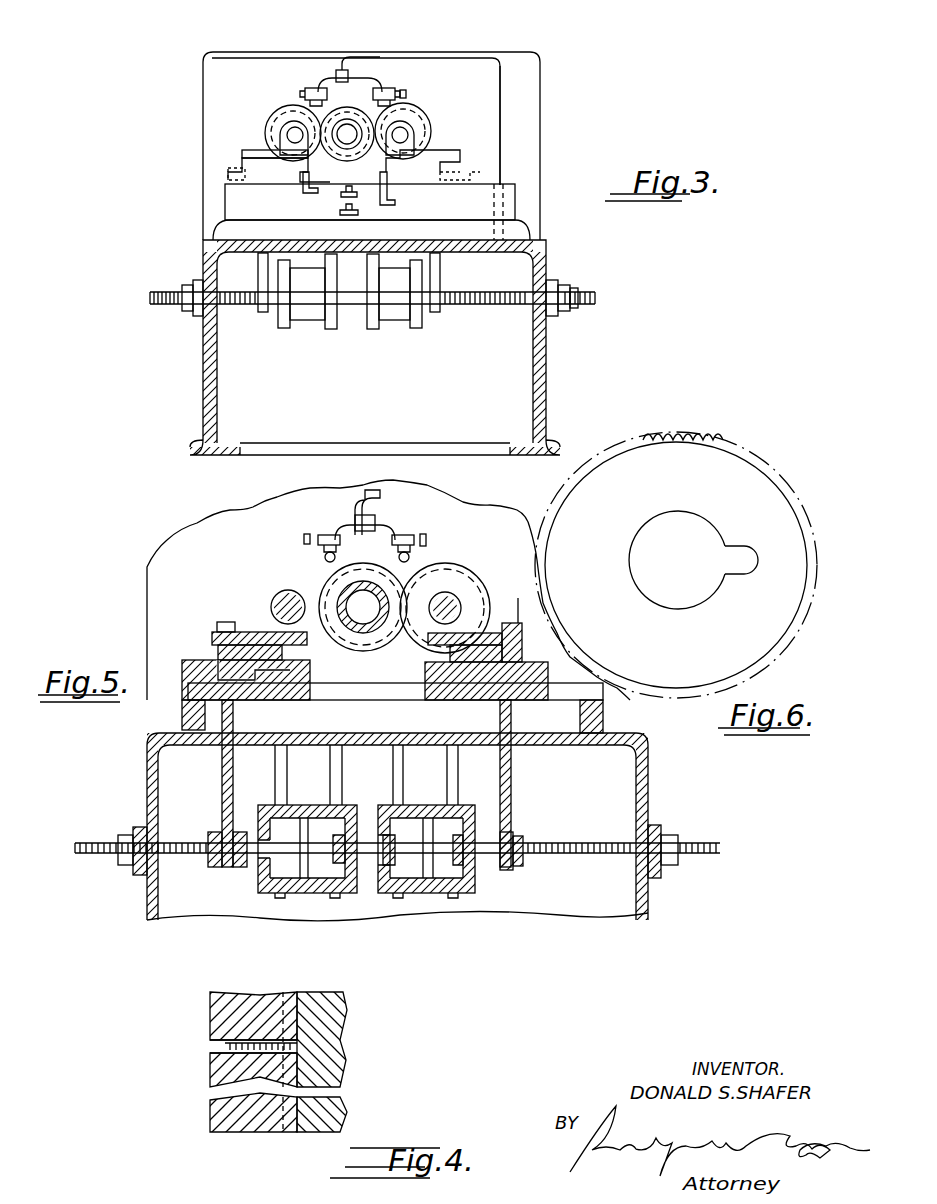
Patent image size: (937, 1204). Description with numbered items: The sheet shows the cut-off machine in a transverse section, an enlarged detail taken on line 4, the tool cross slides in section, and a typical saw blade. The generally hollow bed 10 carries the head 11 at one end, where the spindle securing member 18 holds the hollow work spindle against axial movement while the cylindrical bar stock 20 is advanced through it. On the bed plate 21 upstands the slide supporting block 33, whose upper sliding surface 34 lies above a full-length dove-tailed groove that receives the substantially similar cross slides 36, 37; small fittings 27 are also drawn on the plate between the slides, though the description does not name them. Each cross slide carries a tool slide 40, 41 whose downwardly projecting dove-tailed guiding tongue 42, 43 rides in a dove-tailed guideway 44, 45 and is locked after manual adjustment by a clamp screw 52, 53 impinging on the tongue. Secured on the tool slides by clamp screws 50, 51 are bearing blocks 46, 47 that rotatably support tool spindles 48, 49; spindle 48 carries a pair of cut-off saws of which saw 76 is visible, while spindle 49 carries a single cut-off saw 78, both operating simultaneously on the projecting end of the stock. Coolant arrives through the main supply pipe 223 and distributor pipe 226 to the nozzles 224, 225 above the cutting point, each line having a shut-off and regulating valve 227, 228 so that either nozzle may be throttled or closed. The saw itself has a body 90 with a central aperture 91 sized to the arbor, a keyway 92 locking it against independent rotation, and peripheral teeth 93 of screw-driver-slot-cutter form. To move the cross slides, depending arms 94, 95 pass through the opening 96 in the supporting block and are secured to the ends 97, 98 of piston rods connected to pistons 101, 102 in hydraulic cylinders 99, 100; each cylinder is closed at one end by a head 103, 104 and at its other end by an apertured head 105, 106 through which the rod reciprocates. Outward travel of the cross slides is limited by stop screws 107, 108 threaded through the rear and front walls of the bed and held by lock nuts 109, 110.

In FIG. 3, the section line 4 is at (216, 178).
In FIG. 3, the bed 10 is at (203, 288).
In FIG. 5, the bed 10 is at (665, 838).
In FIG. 3, the head 11 is at (540, 97).
In FIG. 5, the head 11 is at (147, 607).
In FIG. 3, the spindle securing member 18 is at (358, 110).
In FIG. 5, the spindle securing member 18 is at (326, 592).
In FIG. 3, the bar stock 20 is at (375, 118).
In FIG. 3, the bed plate 21 is at (530, 236).
In FIG. 3, the hook bracket 27 is at (352, 160).
In FIG. 3, the slide supporting block 33 is at (515, 202).
In FIG. 5, the slide supporting block 33 is at (606, 724).
In FIG. 4, the slide supporting block 33 is at (232, 1132).
In FIG. 3, the sliding surface 34 is at (503, 192).
In FIG. 5, the cross slide 36 is at (440, 700).
In FIG. 5, the cross slide 37 is at (308, 700).
In FIG. 3, the tool slide 40 is at (430, 165).
In FIG. 5, the tool slide 40 is at (522, 660).
In FIG. 3, the tool slide 41 is at (242, 160).
In FIG. 5, the tool slide 41 is at (216, 650).
In FIG. 5, the guiding tongue 42 is at (468, 700).
In FIG. 5, the guiding tongue 43 is at (255, 700).
In FIG. 4, the guiding tongue 43 is at (330, 1020).
In FIG. 5, the guideway 44 is at (519, 700).
In FIG. 5, the guideway 45 is at (182, 686).
In FIG. 3, the bearing block 46 is at (415, 136).
In FIG. 5, the bearing block 46 is at (450, 592).
In FIG. 3, the bearing block 47 is at (282, 148).
In FIG. 5, the bearing block 47 is at (296, 595).
In FIG. 3, the tool spindle 48 is at (431, 114).
In FIG. 5, the tool spindle 48 is at (458, 598).
In FIG. 3, the tool spindle 49 is at (272, 115).
In FIG. 5, the tool spindle 49 is at (272, 612).
In FIG. 5, the clamp screw 50 is at (517, 625).
In FIG. 5, the clamp screw 51 is at (225, 622).
In FIG. 3, the clamp screw 52 is at (478, 180).
In FIG. 3, the clamp screw 53 is at (242, 153).
In FIG. 4, the clamp screw 53 is at (228, 1046).
In FIG. 3, the cut-off saw 76 is at (420, 125).
In FIG. 5, the cut-off saw 76 is at (462, 578).
In FIG. 3, the cut-off saw 78 is at (282, 117).
In FIG. 6, the saw body 90 is at (740, 490).
In FIG. 6, the aperture 91 is at (660, 600).
In FIG. 6, the keyway 92 is at (733, 563).
In FIG. 6, the peripheral teeth 93 is at (718, 436).
In FIG. 3, the depending arm 94 is at (440, 265).
In FIG. 5, the depending arm 94 is at (511, 774).
In FIG. 3, the depending arm 95 is at (258, 265).
In FIG. 5, the depending arm 95 is at (222, 778).
In FIG. 5, the opening 96 is at (573, 715).
In FIG. 5, the piston rod end 97 is at (500, 853).
In FIG. 5, the piston rod end 98 is at (234, 870).
In FIG. 5, the cylinder 99 is at (463, 885).
In FIG. 3, the cylinder 100 is at (312, 316).
In FIG. 5, the cylinder 100 is at (294, 896).
In FIG. 3, the piston 101 is at (398, 316).
In FIG. 5, the piston 101 is at (408, 825).
In FIG. 5, the piston 102 is at (304, 825).
In FIG. 5, the cylinder head 103 is at (383, 895).
In FIG. 5, the cylinder head 104 is at (345, 840).
In FIG. 5, the cylinder head 105 is at (455, 880).
In FIG. 5, the cylinder head 106 is at (342, 883).
In FIG. 3, the stop screw 107 is at (465, 305).
In FIG. 5, the stop screw 107 is at (575, 856).
In FIG. 3, the stop screw 108 is at (250, 308).
In FIG. 5, the stop screw 108 is at (108, 856).
In FIG. 3, the lock nut 109 is at (560, 288).
In FIG. 5, the lock nut 110 is at (125, 868).
In FIG. 3, the main supply pipe 223 is at (500, 108).
In FIG. 5, the main supply pipe 223 is at (378, 498).
In FIG. 3, the nozzle 224 is at (406, 94).
In FIG. 5, the nozzle 224 is at (396, 556).
In FIG. 3, the nozzle 225 is at (347, 91).
In FIG. 5, the nozzle 225 is at (318, 556).
In FIG. 3, the distributor pipe 226 is at (338, 70).
In FIG. 5, the distributor pipe 226 is at (395, 530).
In FIG. 3, the regulating valve 227 is at (393, 88).
In FIG. 5, the regulating valve 227 is at (426, 548).
In FIG. 3, the regulating valve 228 is at (305, 92).
In FIG. 5, the regulating valve 228 is at (314, 538).